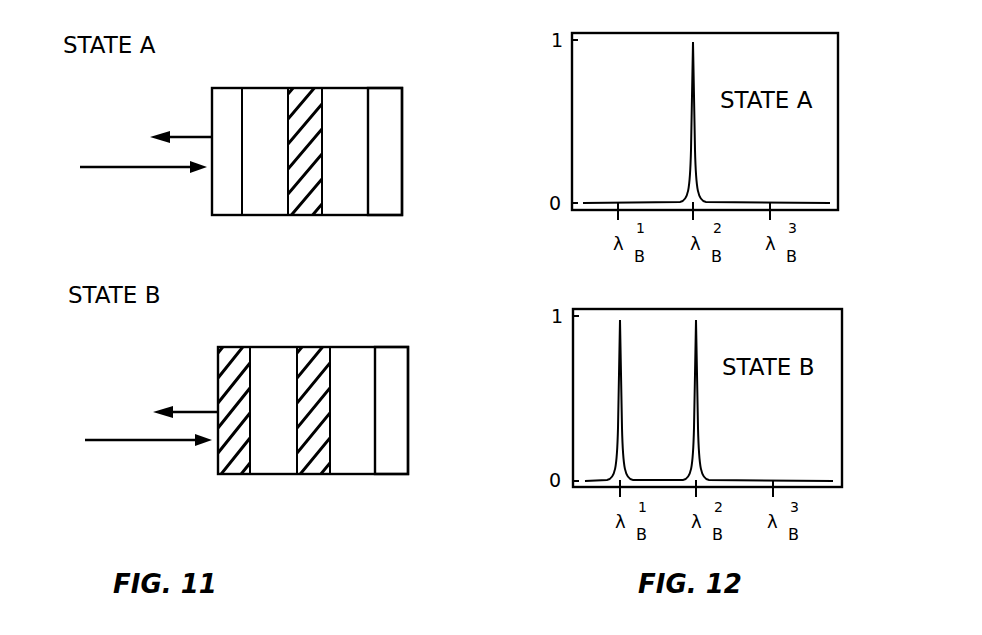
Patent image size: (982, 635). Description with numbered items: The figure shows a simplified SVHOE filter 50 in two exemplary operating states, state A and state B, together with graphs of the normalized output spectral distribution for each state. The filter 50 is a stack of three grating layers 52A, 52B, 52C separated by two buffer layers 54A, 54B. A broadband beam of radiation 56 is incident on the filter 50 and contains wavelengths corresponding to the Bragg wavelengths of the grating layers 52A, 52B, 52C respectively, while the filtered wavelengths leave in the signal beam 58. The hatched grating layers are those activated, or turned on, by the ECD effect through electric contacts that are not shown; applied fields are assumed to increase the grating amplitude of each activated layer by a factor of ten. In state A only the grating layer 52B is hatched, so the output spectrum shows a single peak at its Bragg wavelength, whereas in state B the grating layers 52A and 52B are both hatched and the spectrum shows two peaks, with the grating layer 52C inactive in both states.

The SVHOE filter 50 is at (192, 234).
The grating layer 52A is at (232, 87).
The grating layer 52B is at (310, 87).
The grating layer 52C is at (387, 87).
The buffer layer 54A is at (265, 216).
The buffer layer 54B is at (345, 216).
The beam of radiation 56 is at (117, 167).
The signal beam 58 is at (185, 136).